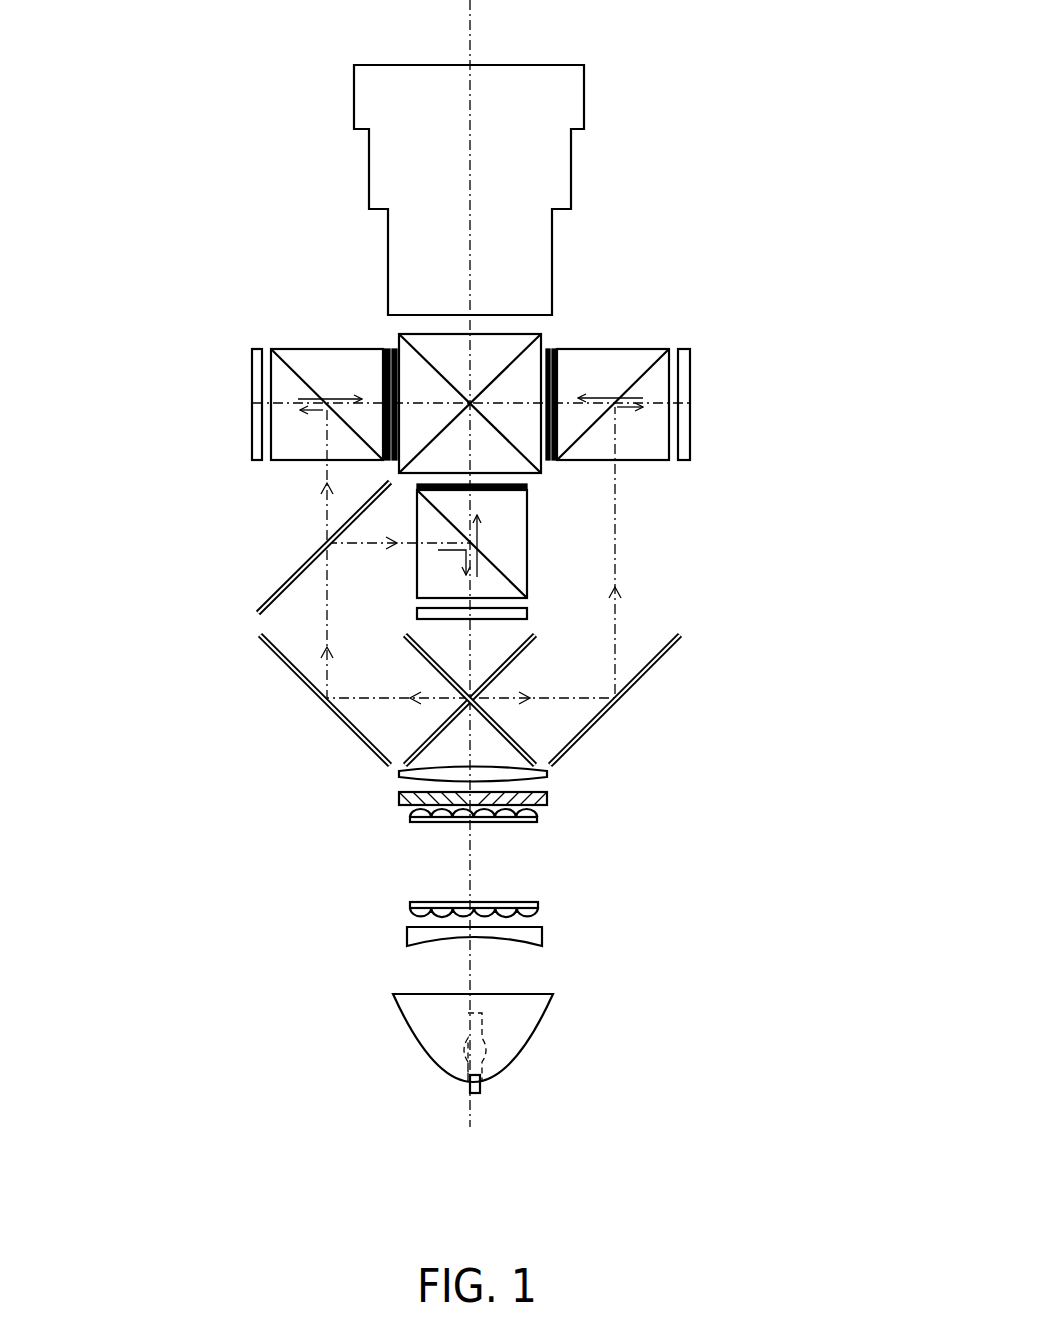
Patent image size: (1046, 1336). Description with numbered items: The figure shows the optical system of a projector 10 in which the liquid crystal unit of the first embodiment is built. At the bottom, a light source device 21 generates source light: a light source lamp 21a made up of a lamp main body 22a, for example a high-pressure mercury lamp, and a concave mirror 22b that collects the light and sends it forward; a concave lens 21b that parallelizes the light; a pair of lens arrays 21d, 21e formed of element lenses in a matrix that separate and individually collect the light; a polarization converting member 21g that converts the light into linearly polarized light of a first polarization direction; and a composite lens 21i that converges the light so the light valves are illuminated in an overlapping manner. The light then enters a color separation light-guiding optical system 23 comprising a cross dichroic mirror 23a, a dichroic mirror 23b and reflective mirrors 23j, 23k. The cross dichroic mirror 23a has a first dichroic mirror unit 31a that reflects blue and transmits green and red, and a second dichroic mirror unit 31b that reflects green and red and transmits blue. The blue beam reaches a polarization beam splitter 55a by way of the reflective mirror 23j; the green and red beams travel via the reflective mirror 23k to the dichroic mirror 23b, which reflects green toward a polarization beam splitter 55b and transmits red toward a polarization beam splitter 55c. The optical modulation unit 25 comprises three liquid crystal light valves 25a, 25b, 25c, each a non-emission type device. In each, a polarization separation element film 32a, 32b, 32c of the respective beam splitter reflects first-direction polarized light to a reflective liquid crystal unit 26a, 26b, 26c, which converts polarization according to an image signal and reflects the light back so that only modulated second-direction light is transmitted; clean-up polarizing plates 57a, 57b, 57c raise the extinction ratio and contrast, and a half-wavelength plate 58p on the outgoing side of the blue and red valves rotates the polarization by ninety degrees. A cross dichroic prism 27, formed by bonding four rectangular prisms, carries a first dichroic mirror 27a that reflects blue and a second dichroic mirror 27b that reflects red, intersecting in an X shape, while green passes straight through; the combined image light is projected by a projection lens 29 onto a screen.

The projector 10 is at (817, 14).
The projection lens 29 is at (532, 150).
The cross dichroic prism 27 is at (455, 348).
The first dichroic mirror 27a is at (422, 352).
The second dichroic mirror 27b is at (548, 347).
The half-wavelength plate 58p is at (397, 350).
The clean-up polarizing plate 57c is at (386, 355).
The clean-up polarizing plate 57a is at (550, 352).
The clean-up polarizing plate 57b is at (527, 486).
The optical modulation unit 25 is at (678, 334).
The liquid crystal light valve 25a is at (681, 398).
The liquid crystal light valve 25b is at (554, 572).
The liquid crystal light valve 25c is at (257, 389).
The polarization beam splitter 55a is at (664, 378).
The polarization beam splitter 55b is at (510, 544).
The polarization beam splitter 55c is at (280, 378).
The polarization separation element film 32a is at (645, 372).
The polarization separation element film 32b is at (505, 570).
The polarization separation element film 32c is at (297, 376).
The liquid crystal unit 26a is at (687, 415).
The liquid crystal unit 26b is at (530, 615).
The liquid crystal unit 26c is at (252, 418).
The color separation light-guiding optical system 23 is at (442, 645).
The cross dichroic mirror 23a is at (505, 721).
The dichroic mirror 23b is at (268, 596).
The reflective mirror 23j is at (648, 672).
The reflective mirror 23k is at (293, 675).
The first dichroic mirror unit 31a is at (437, 727).
The second dichroic mirror unit 31b is at (512, 728).
The light source device 21 is at (494, 956).
The light source lamp 21a is at (407, 1032).
The concave lens 21b is at (407, 937).
The lens array 21d is at (410, 905).
The lens array 21e is at (410, 823).
The polarization converting member 21g is at (399, 797).
The composite lens 21i is at (399, 775).
The lamp main body 22a is at (463, 1053).
The concave mirror 22b is at (425, 1060).